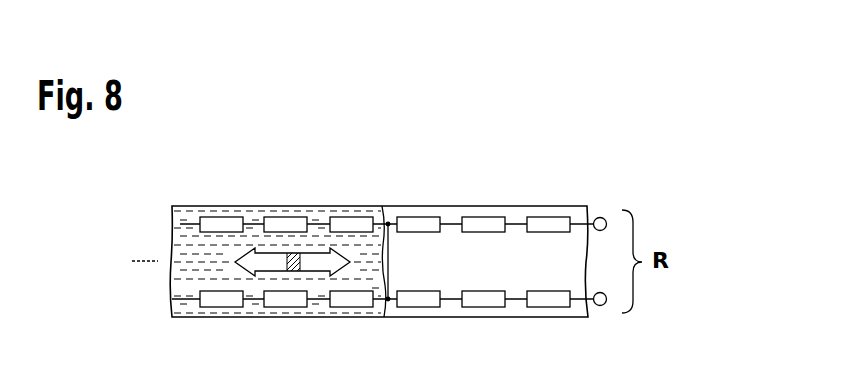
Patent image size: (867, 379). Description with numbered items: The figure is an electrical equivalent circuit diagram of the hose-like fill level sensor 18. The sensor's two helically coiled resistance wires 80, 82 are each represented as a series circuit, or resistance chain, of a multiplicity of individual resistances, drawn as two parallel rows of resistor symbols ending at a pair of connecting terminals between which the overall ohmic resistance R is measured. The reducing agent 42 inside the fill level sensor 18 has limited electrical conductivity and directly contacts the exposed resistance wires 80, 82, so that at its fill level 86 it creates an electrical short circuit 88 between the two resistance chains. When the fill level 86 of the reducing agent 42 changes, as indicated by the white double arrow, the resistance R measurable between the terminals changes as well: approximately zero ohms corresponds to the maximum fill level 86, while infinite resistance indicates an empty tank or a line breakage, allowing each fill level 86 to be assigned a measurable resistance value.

The fill level sensor 18 is at (233, 187).
The reducing agent 42 is at (210, 275).
The fill level 86 is at (382, 251).
The electrical short circuit 88 is at (388, 262).
The resistance wire 80 is at (664, 225).
The resistance wire 82 is at (664, 300).